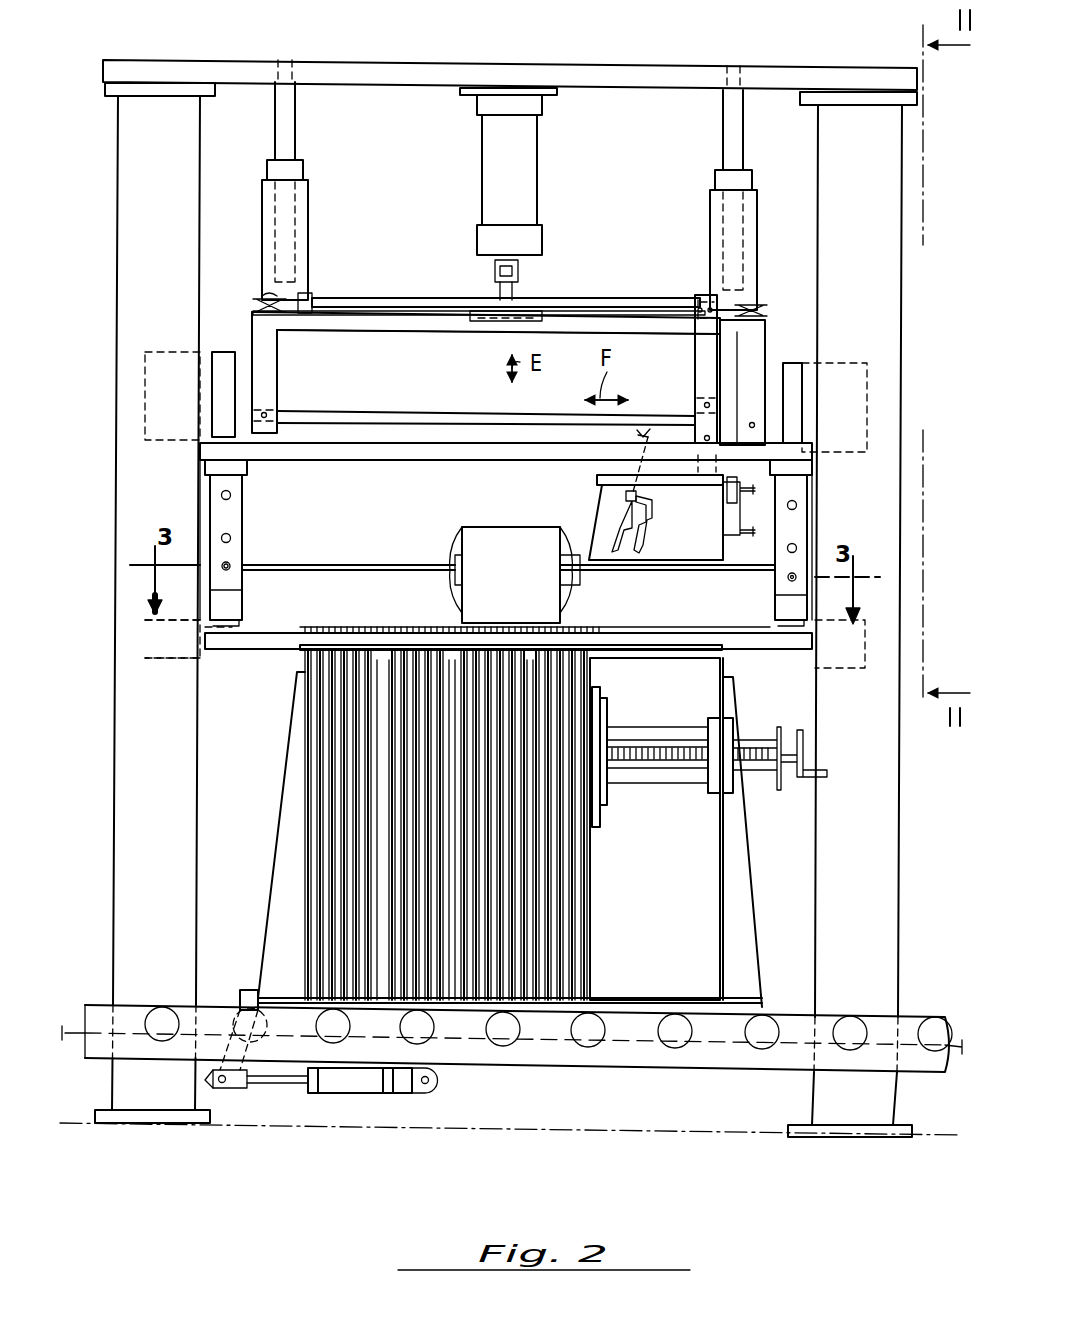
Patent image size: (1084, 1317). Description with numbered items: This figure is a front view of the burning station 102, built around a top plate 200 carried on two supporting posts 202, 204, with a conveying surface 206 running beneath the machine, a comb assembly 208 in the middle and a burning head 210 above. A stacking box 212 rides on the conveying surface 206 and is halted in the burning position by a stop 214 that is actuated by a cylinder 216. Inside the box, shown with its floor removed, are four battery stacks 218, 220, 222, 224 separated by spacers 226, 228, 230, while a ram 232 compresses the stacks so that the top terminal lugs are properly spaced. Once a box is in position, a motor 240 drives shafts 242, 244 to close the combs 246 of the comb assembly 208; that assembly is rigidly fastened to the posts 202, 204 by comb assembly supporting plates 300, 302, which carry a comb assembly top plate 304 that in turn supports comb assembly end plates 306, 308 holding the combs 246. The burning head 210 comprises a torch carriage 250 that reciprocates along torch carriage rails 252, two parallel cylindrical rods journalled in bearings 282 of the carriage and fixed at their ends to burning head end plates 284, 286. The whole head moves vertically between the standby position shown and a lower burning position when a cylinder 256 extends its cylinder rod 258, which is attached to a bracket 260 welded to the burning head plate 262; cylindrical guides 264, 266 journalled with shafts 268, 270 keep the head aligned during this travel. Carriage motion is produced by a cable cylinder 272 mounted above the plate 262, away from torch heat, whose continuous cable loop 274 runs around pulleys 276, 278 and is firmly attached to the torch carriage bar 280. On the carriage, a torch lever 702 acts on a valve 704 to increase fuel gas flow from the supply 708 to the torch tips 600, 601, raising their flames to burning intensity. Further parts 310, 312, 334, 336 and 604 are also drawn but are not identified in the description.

The burning station 102 is at (250, 1138).
The top plate 200 is at (400, 70).
The supporting post 202 is at (140, 235).
The supporting post 204 is at (880, 342).
The conveying surface 206 is at (655, 1075).
The comb assembly 208 is at (205, 512).
The burning head 210 is at (365, 285).
The stacking box 212 is at (293, 705).
The stop 214 is at (252, 988).
The cylinder 216 is at (370, 1088).
The stack 218 is at (335, 770).
The stack 220 is at (400, 872).
The stack 222 is at (500, 858).
The stack 224 is at (565, 882).
The spacer 226 is at (375, 940).
The spacer 228 is at (530, 936).
The spacer 230 is at (558, 938).
The ram 232 is at (675, 790).
The motor 240 is at (492, 548).
The shaft 242 is at (350, 562).
The shaft 244 is at (680, 578).
The combs 246 is at (252, 636).
The torch carriage 250 is at (596, 493).
The torch carriage rails 252 is at (398, 408).
The cylinder 256 is at (520, 178).
The cylinder rod 258 is at (516, 262).
The bracket 260 is at (512, 290).
The burning head plate 262 is at (450, 327).
The cylindrical guide 264 is at (300, 200).
The cylindrical guide 266 is at (715, 228).
The shaft 268 is at (290, 115).
The shaft 270 is at (732, 135).
The cable cylinder 272 is at (620, 305).
The cable loop 274 is at (428, 298).
The pulley 276 is at (752, 305).
The pulley 278 is at (258, 299).
The torch carriage bar 280 is at (700, 362).
The bearings 282 is at (705, 414).
The burning head end plate 284 is at (268, 395).
The burning head end plate 286 is at (760, 355).
The comb assembly supporting plate 300 is at (163, 388).
The comb assembly supporting plate 302 is at (880, 402).
The comb assembly top plate 304 is at (408, 460).
The comb assembly end plate 306 is at (240, 532).
The comb assembly end plate 308 is at (800, 540).
The bearing 310 is at (230, 570).
The bracket foot 312 is at (786, 600).
The left guide block 334 is at (225, 362).
The right guide block 336 is at (795, 370).
The torch tip 600 is at (641, 553).
The torch tip 601 is at (614, 552).
The gripper housing bottom 604 is at (706, 562).
The torch lever 702 is at (694, 490).
The valve 704 is at (627, 493).
The supply 708 is at (640, 437).